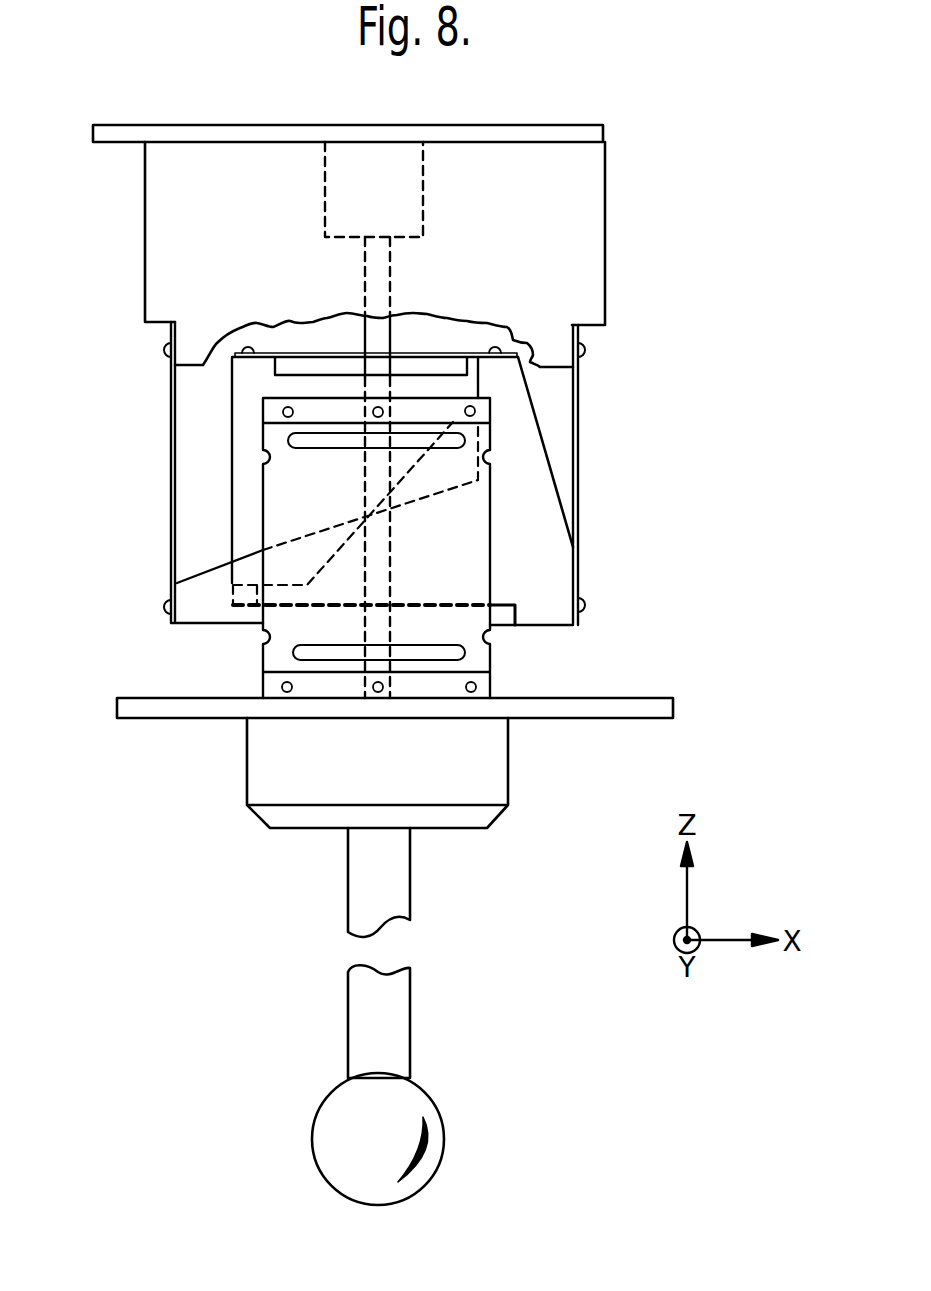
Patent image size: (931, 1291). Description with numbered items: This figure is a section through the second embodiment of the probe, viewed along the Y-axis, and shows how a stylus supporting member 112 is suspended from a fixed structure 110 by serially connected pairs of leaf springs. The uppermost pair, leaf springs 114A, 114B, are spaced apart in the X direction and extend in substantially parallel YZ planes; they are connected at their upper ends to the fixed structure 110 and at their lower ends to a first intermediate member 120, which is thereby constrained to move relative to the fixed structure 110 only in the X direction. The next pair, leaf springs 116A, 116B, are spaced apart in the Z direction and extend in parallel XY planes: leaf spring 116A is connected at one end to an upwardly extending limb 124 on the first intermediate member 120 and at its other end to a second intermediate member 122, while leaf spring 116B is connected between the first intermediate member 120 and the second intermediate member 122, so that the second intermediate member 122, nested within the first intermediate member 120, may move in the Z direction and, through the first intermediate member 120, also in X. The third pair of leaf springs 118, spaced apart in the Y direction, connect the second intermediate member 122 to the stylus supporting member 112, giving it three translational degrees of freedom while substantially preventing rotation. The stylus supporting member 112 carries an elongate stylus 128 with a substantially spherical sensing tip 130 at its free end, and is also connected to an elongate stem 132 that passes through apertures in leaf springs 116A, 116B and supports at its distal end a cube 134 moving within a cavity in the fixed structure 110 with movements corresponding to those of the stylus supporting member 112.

The fixed structure 110 is at (593, 207).
The stylus supporting member 112 is at (502, 753).
The leaf spring 114A is at (171, 420).
The leaf spring 114B is at (578, 445).
The leaf spring 116A is at (440, 355).
The leaf spring 116B is at (270, 622).
The pair of leaf springs 118 is at (482, 563).
The first intermediate member 120 is at (532, 618).
The second intermediate member 122 is at (238, 520).
The upwardly extending limb 124 is at (520, 400).
The elongate stylus 128 is at (400, 1018).
The sensing tip 130 is at (323, 1120).
The elongate stem 132 is at (365, 273).
The cube 134 is at (325, 197).